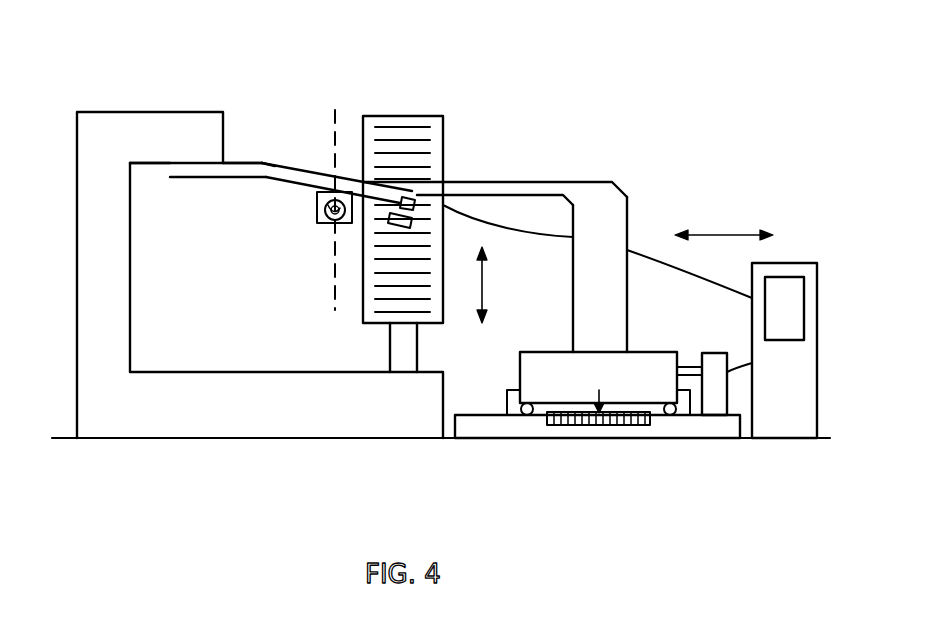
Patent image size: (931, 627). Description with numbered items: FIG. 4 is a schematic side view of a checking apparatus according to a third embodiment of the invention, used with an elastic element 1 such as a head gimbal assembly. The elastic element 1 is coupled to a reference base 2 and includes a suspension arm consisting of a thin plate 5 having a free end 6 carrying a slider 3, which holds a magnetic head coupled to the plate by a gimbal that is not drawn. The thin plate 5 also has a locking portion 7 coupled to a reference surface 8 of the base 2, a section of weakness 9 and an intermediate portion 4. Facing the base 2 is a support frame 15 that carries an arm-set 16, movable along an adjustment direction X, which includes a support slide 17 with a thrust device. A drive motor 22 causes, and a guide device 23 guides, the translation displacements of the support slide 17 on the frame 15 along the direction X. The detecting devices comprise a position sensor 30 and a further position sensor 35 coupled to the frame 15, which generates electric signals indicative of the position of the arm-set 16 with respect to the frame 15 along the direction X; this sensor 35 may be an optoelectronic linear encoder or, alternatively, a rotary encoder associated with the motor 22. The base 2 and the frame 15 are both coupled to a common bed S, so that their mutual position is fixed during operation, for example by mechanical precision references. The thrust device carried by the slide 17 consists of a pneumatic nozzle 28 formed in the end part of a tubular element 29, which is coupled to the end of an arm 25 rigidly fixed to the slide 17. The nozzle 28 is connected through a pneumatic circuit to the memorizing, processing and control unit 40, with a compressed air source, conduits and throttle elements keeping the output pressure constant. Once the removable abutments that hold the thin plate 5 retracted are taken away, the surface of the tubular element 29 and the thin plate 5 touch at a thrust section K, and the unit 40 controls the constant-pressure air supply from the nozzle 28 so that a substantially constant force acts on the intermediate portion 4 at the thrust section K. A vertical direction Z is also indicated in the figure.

The elastic element 1 is at (273, 133).
The reference base 2 is at (174, 388).
The slider 3 is at (388, 222).
The intermediate portion 4 is at (288, 178).
The thin plate 5 is at (248, 160).
The free end 6 is at (413, 195).
The locking portion 7 is at (193, 172).
The reference surface 8 is at (145, 165).
The section of weakness 9 is at (263, 178).
The support frame 15 is at (718, 430).
The arm-set 16 is at (645, 185).
The support slide 17 is at (626, 290).
The drive motor 22 is at (713, 368).
The guide device 23 is at (527, 412).
The arm 25 is at (553, 185).
The pneumatic nozzle 28 is at (340, 203).
The tubular element 29 is at (319, 190).
The position sensor 30 is at (443, 116).
The position sensor 35 is at (599, 425).
The memorizing, processing and control unit 40 is at (808, 268).
The common bed S is at (77, 455).
The thrust section K is at (330, 288).
The Z axis direction Z is at (499, 285).
The adjustment direction X is at (724, 222).